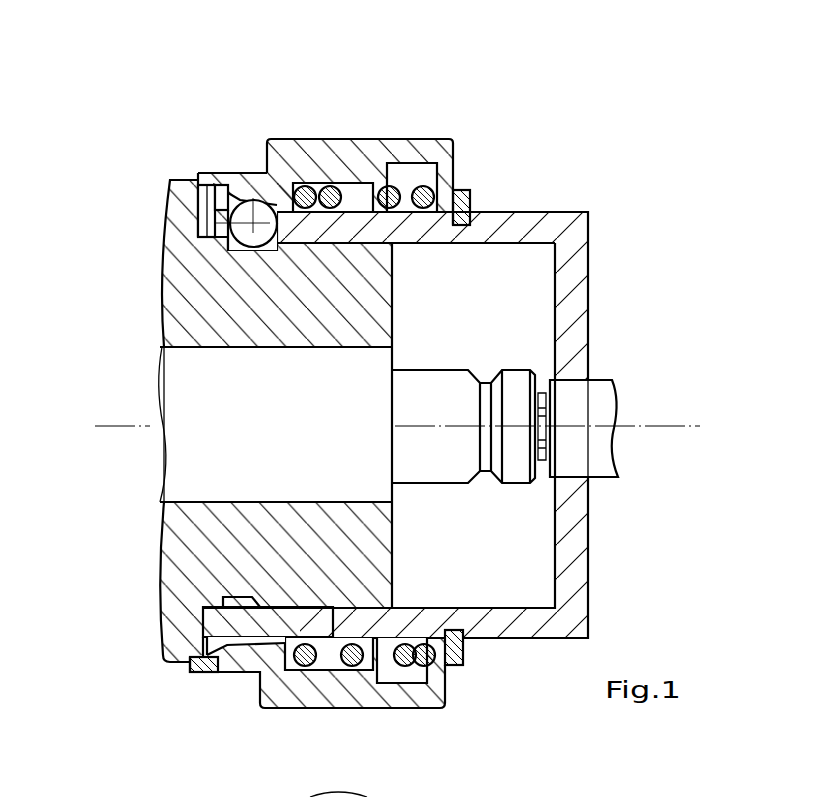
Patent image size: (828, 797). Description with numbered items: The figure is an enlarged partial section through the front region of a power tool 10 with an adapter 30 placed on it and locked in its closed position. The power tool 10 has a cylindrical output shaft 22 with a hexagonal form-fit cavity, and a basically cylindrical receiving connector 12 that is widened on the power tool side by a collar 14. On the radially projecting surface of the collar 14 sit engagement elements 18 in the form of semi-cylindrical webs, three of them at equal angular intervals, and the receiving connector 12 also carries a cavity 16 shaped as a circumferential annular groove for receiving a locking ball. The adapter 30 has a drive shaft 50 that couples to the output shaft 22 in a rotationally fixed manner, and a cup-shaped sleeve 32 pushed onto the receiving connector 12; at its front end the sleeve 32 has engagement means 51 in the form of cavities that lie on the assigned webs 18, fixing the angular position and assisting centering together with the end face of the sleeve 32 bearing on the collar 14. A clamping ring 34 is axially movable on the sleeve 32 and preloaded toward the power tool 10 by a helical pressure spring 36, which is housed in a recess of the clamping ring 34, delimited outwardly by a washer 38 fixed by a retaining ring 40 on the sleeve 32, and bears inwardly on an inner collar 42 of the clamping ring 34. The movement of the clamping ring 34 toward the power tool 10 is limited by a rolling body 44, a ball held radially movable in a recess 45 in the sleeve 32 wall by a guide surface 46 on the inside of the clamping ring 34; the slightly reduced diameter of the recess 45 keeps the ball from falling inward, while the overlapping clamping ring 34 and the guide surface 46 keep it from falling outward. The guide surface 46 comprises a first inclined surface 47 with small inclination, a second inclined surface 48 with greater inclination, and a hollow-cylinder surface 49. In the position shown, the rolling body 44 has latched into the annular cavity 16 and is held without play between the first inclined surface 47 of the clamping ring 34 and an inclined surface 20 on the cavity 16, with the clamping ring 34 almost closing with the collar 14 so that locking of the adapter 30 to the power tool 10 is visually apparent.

The power tool 10 is at (141, 270).
The receiving connector 12 is at (320, 578).
The collar 14 is at (205, 621).
The cavity 16 is at (237, 597).
The engagement elements 18 is at (202, 208).
The inclined surface 20 is at (243, 609).
The output shaft 22 is at (442, 390).
The adapter 30 is at (565, 188).
The sleeve 32 is at (505, 228).
The clamping ring 34 is at (373, 153).
The pressure spring 36 is at (303, 186).
The washer 38 is at (461, 189).
The retaining ring 40 is at (480, 225).
The inner collar 42 is at (241, 180).
The rolling body 44 is at (210, 212).
The recess 45 is at (324, 186).
The guide surface 46 is at (229, 190).
The first inclined surface 47 is at (257, 641).
The second inclined surface 48 is at (202, 672).
The hollow-cylinder surface 49 is at (203, 655).
The drive shaft 50 is at (602, 412).
The engagement means 51 is at (245, 225).